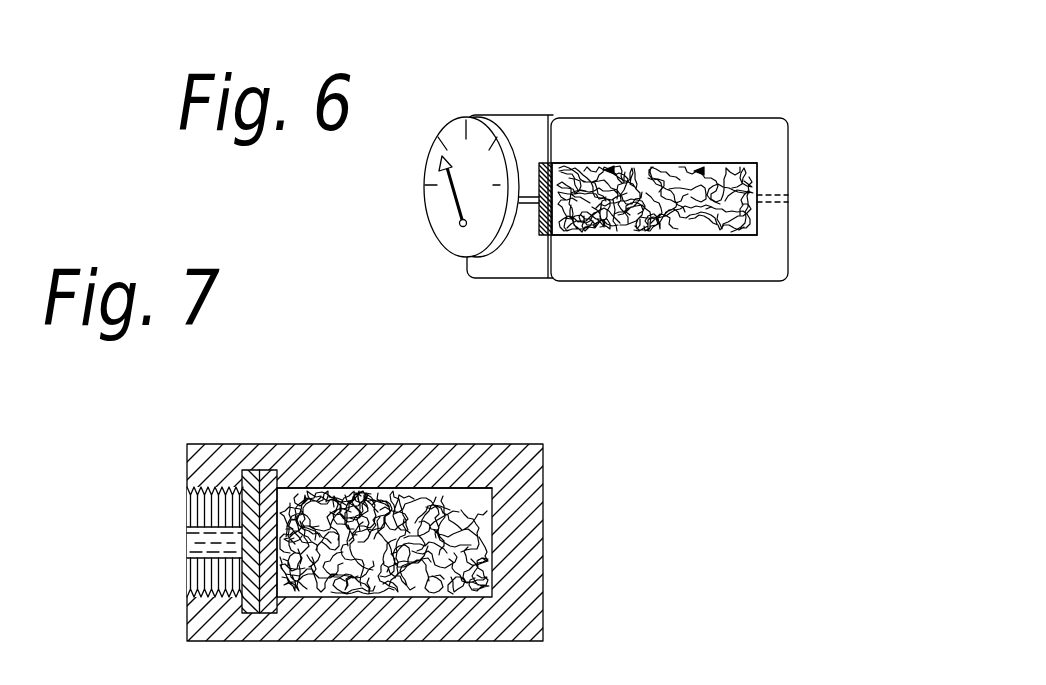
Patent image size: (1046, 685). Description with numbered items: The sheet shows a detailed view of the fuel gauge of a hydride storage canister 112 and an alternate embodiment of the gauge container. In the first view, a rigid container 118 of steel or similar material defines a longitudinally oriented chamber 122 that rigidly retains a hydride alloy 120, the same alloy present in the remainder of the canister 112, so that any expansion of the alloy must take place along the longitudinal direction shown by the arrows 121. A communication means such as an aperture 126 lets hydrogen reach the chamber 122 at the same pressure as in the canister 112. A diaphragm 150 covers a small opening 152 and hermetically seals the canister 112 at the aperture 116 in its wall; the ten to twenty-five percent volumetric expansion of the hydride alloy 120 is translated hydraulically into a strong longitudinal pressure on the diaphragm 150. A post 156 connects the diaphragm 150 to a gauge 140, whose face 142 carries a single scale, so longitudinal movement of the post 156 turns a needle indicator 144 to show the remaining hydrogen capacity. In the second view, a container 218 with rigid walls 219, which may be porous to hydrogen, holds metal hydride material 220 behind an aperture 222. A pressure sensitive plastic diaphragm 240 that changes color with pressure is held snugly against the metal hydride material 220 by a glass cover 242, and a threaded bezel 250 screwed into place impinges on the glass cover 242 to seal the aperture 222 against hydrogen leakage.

In FIG. 6, the canister 112 is at (612, 183).
In FIG. 6, the aperture in the wall of canister 116 is at (417, 162).
In FIG. 6, the container 118 is at (767, 130).
In FIG. 6, the hydride alloy 120 is at (737, 236).
In FIG. 6, the arrows 121 is at (655, 164).
In FIG. 6, the chamber 122 is at (760, 182).
In FIG. 6, the aperture 126 is at (788, 198).
In FIG. 6, the gauge 140 is at (478, 116).
In FIG. 6, the face of the gauge 142 is at (443, 226).
In FIG. 6, the needle indicator 144 is at (447, 194).
In FIG. 6, the diaphragm 150 is at (546, 162).
In FIG. 6, the opening 152 is at (577, 162).
In FIG. 6, the post 156 is at (520, 203).
In FIG. 7, the container 218 is at (363, 494).
In FIG. 7, the rigid walls 219 is at (368, 448).
In FIG. 7, the metal hydride material 220 is at (418, 493).
In FIG. 7, the aperture 222 is at (322, 493).
In FIG. 7, the diaphragm 240 is at (262, 470).
In FIG. 7, the glass cover 242 is at (243, 484).
In FIG. 7, the threaded bezel 250 is at (187, 515).